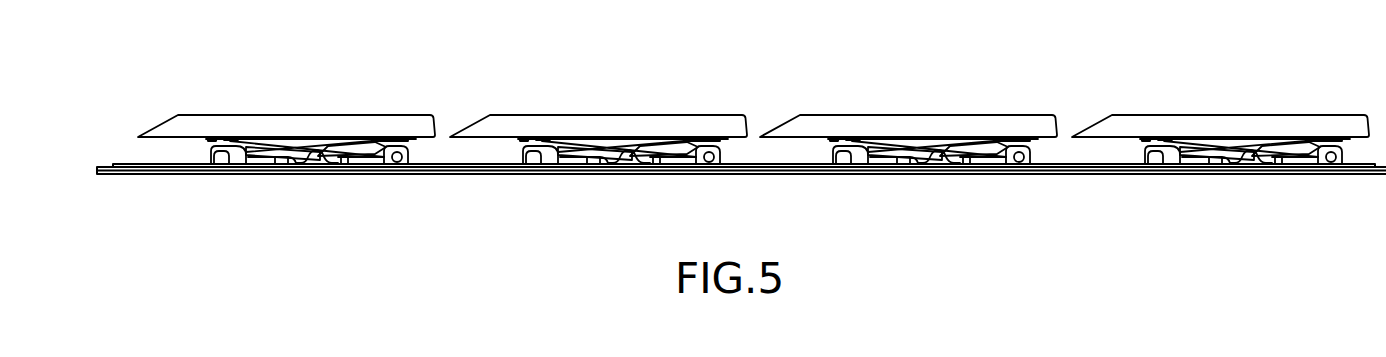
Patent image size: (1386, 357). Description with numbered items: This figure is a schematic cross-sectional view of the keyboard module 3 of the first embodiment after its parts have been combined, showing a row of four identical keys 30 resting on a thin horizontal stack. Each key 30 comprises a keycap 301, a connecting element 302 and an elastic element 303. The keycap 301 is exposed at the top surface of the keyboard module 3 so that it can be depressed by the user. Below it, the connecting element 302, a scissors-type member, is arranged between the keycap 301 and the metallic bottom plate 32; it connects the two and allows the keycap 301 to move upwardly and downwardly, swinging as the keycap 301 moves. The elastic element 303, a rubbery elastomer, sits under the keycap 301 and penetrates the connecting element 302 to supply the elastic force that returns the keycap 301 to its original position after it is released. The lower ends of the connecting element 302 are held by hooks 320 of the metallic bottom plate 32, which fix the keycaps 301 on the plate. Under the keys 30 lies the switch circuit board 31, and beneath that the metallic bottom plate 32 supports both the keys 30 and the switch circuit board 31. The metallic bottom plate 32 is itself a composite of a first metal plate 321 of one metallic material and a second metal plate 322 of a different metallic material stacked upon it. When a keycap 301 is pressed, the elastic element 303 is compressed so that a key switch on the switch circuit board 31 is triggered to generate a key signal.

The keyboard module 3 is at (1157, 21).
The key 30 is at (922, 98).
The keycap 301 is at (660, 125).
The connecting element 302 is at (578, 150).
The elastic element 303 is at (650, 163).
The hook 320 is at (530, 165).
The switch circuit board 31 is at (138, 163).
The metallic bottom plate 32 is at (741, 218).
The first metal plate 321 is at (1060, 232).
The second metal plate 322 is at (1050, 170).